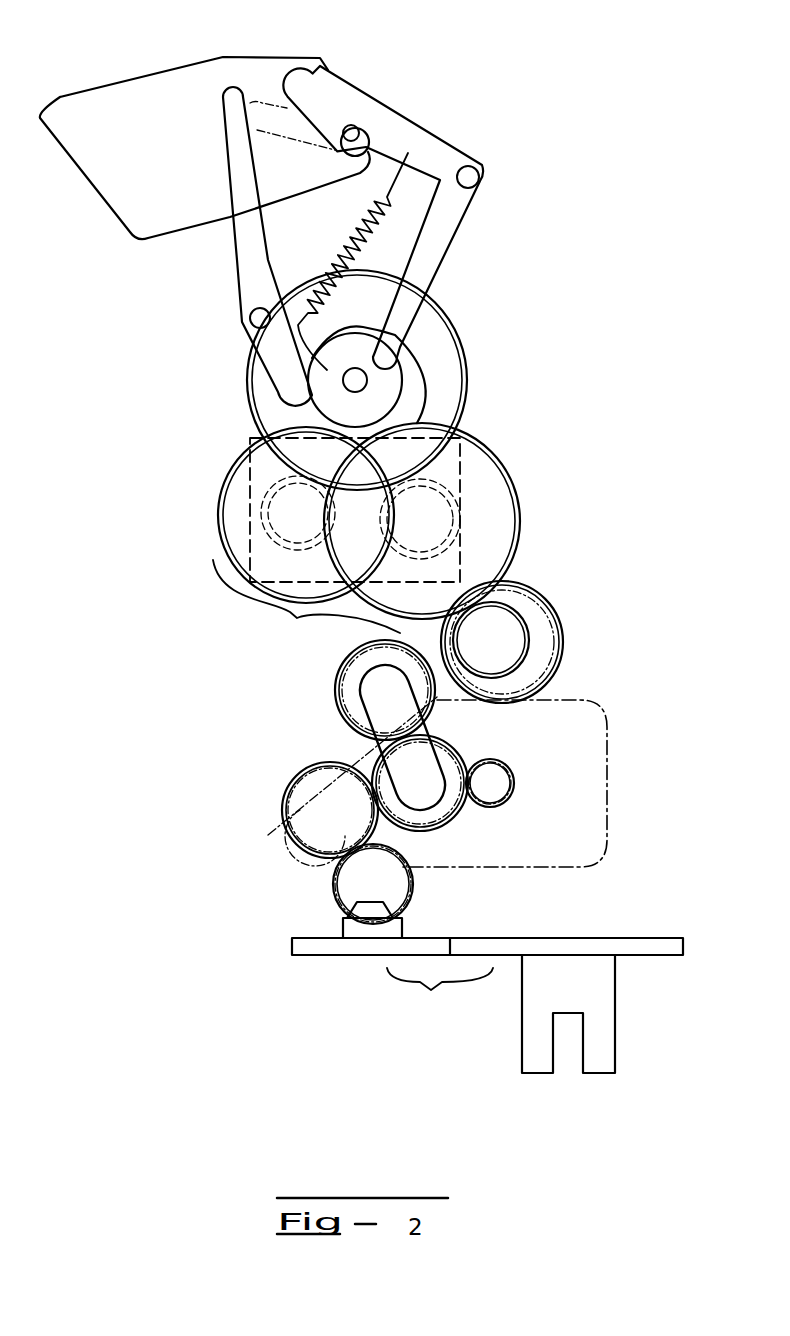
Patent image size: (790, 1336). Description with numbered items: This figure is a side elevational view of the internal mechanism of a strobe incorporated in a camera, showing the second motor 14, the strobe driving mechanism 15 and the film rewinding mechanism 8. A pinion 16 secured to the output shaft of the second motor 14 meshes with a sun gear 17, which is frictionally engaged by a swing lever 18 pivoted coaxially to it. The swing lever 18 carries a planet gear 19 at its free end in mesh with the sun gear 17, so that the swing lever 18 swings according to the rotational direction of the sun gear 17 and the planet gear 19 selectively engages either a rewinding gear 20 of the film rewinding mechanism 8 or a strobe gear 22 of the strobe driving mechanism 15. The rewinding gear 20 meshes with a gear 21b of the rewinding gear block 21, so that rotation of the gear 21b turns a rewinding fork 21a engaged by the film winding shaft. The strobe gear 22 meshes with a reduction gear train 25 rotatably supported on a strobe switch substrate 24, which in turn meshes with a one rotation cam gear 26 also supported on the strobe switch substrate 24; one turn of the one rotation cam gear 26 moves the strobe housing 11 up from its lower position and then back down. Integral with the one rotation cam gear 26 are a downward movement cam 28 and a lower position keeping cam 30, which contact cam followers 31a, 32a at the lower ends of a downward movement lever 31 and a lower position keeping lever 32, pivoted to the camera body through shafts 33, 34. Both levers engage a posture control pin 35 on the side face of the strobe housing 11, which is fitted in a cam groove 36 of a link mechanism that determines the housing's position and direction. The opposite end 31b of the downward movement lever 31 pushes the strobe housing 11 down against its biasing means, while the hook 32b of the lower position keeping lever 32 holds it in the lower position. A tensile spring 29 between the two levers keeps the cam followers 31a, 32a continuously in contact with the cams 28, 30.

The film rewinding mechanism 8 is at (332, 977).
The strobe housing 11 is at (283, 58).
The second motor 14 is at (598, 810).
The strobe driving mechanism 15 is at (612, 225).
The pinion 16 is at (495, 795).
The sun gear 17 is at (448, 757).
The swing lever 18 is at (365, 735).
The planet gear 19 is at (340, 698).
The rewinding gear 20 is at (348, 893).
The rewinding gear block 21 is at (487, 975).
The rewinding fork 21a is at (600, 1038).
The gear 21b is at (385, 915).
The strobe gear 22 is at (563, 641).
The strobe switch substrate 24 is at (500, 458).
The reduction gear train 25 is at (306, 606).
The one rotation cam gear 26 is at (455, 378).
The downward movement cam 28 is at (240, 470).
The tensile spring 29 is at (384, 226).
The lower position keeping cam 30 is at (388, 397).
The downward movement lever 31 is at (240, 278).
The cam follower 31a is at (285, 405).
The opposite end 31b is at (222, 105).
The lower position keeping lever 32 is at (450, 243).
The cam follower 32a is at (400, 347).
The hook 32b is at (352, 130).
The shaft 33 is at (255, 330).
The shaft 34 is at (480, 177).
The posture control pin 35 is at (368, 143).
The cam groove 36 is at (280, 135).